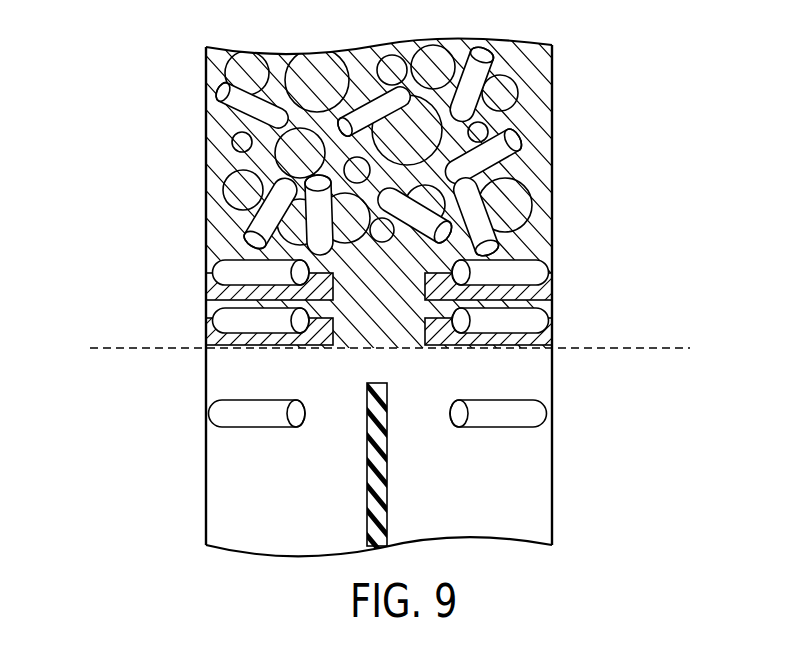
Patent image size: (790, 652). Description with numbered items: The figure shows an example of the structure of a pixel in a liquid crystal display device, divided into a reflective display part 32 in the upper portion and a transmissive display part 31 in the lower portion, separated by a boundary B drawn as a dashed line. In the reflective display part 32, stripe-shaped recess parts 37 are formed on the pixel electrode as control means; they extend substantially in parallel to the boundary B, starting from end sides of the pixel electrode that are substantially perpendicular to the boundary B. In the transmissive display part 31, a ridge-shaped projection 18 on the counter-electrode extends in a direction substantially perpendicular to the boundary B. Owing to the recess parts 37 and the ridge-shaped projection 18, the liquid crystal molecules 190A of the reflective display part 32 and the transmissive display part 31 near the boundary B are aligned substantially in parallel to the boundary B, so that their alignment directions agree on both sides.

The liquid crystal molecules 190A is at (253, 323).
The recess parts 37 is at (540, 336).
The ridge-shaped projection 18 is at (378, 515).
The reflective display part 32 is at (665, 350).
The transmissive display part 31 is at (662, 568).
The boundary B is at (517, 349).